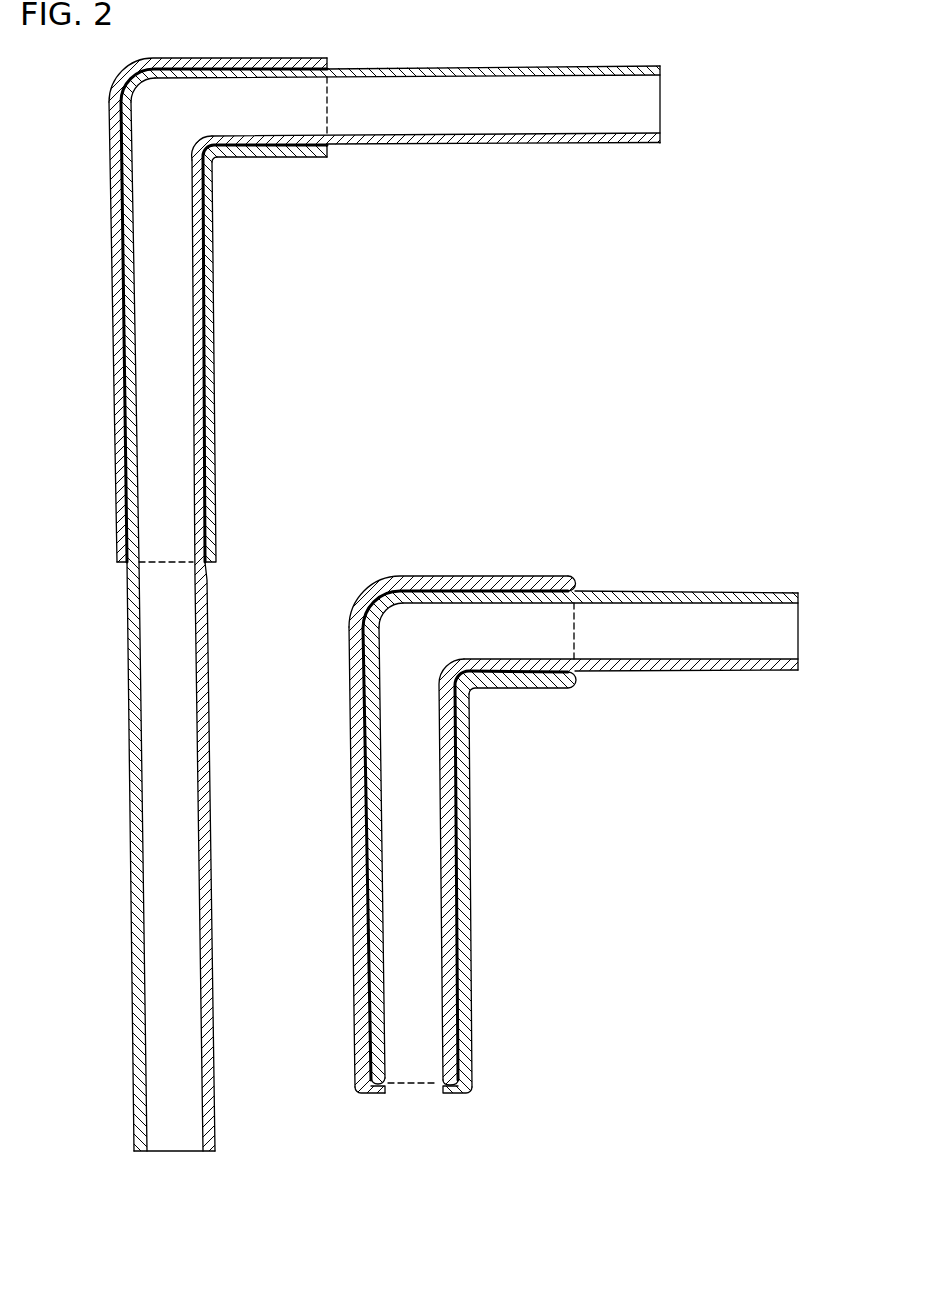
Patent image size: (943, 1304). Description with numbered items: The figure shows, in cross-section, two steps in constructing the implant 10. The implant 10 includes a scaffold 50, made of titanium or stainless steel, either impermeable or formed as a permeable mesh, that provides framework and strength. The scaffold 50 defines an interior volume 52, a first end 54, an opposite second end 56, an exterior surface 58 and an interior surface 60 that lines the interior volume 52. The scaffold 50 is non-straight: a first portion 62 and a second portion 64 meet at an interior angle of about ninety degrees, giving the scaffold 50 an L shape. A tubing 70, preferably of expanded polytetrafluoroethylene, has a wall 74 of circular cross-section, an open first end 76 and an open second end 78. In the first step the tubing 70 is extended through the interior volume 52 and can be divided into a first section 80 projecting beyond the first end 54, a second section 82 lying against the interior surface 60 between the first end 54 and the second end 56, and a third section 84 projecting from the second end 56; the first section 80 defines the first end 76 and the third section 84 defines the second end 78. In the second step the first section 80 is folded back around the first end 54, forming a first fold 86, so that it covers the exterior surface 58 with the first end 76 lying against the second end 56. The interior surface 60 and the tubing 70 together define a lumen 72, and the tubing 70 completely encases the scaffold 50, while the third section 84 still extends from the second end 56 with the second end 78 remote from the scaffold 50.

In FIG. 3, the implant 10 is at (564, 785).
In FIG. 2, the scaffold 50 is at (212, 322).
In FIG. 3, the scaffold 50 is at (457, 805).
In FIG. 2, the interior volume 52 is at (125, 492).
In FIG. 2, the first end 54 is at (123, 562).
In FIG. 3, the first end 54 is at (457, 1084).
In FIG. 2, the second end 56 is at (328, 155).
In FIG. 3, the second end 56 is at (575, 592).
In FIG. 2, the exterior surface 58 is at (113, 373).
In FIG. 3, the exterior surface 58 is at (462, 951).
In FIG. 2, the interior surface 60 is at (113, 311).
In FIG. 3, the interior surface 60 is at (452, 897).
In FIG. 2, the first portion 62 is at (285, 162).
In FIG. 2, the second portion 64 is at (212, 260).
In FIG. 2, the tubing 70 is at (528, 65).
In FIG. 3, the tubing 70 is at (352, 872).
In FIG. 3, the lumen 72 is at (386, 1070).
In FIG. 2, the wall 74 is at (480, 144).
In FIG. 3, the wall 74 is at (648, 671).
In FIG. 2, the first end 76 is at (149, 1152).
In FIG. 2, the second end 78 is at (662, 133).
In FIG. 3, the second end 78 is at (800, 657).
In FIG. 2, the first section 80 is at (130, 798).
In FIG. 3, the first section 80 is at (353, 966).
In FIG. 2, the second section 82 is at (192, 403).
In FIG. 3, the second section 82 is at (380, 792).
In FIG. 2, the third section 84 is at (453, 66).
In FIG. 3, the third section 84 is at (695, 593).
In FIG. 3, the first fold 86 is at (373, 1093).